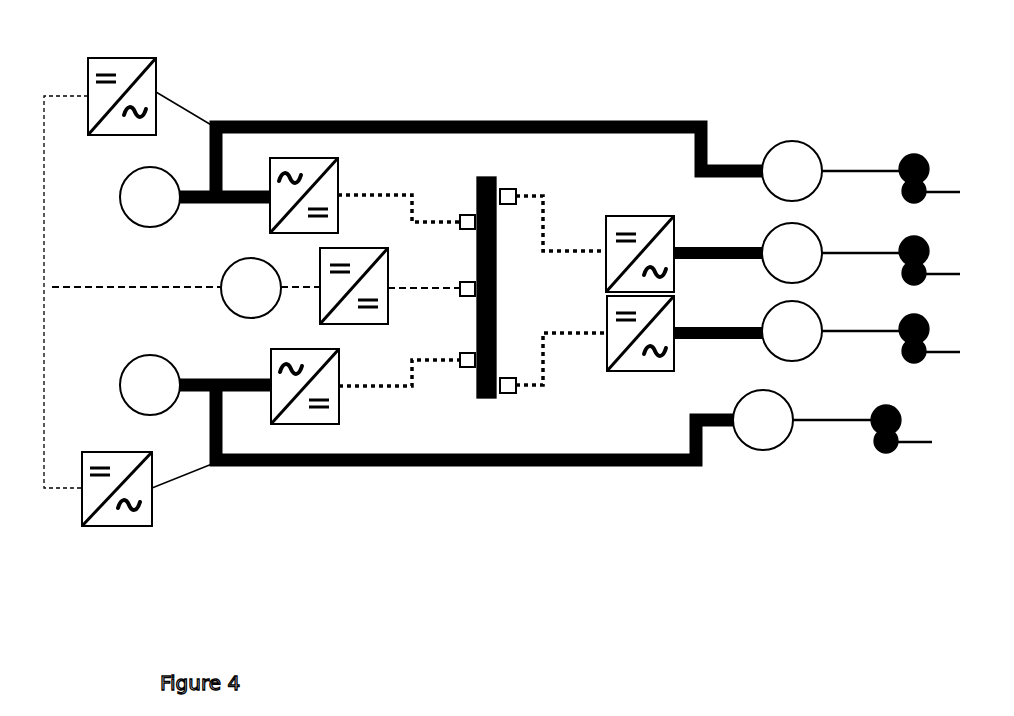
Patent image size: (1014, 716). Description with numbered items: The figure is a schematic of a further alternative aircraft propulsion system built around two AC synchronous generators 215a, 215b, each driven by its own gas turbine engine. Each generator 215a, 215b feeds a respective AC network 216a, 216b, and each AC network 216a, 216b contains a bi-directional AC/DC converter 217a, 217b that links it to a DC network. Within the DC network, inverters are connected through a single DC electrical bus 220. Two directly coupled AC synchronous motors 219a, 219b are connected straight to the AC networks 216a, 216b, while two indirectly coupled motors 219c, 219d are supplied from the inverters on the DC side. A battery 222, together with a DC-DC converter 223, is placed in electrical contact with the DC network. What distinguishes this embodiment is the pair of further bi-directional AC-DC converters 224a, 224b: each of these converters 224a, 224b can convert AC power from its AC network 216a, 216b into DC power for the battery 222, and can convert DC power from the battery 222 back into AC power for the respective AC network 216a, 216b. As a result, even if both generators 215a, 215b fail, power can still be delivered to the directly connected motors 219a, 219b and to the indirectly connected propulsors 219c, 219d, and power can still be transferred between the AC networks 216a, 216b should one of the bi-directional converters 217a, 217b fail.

The first AC synchronous generator 215a is at (120, 195).
The second AC synchronous generator 215b is at (130, 364).
The first AC network 216a is at (396, 119).
The second AC network 216b is at (450, 466).
The first bi-directional AC/DC converter 217a is at (345, 195).
The second bi-directional AC/DC converter 217b is at (339, 418).
The directly coupled AC synchronous motor 219a is at (770, 150).
The directly coupled AC synchronous motor 219b is at (762, 451).
The indirectly coupled motor 219c is at (770, 235).
The indirectly coupled motor 219d is at (768, 313).
The DC electrical bus 220 is at (497, 178).
The battery 222 is at (250, 320).
The DC-DC converter 223 is at (388, 322).
The first further bi-directional AC-DC converter 224a is at (152, 58).
The second further bi-directional AC-DC converter 224b is at (152, 526).